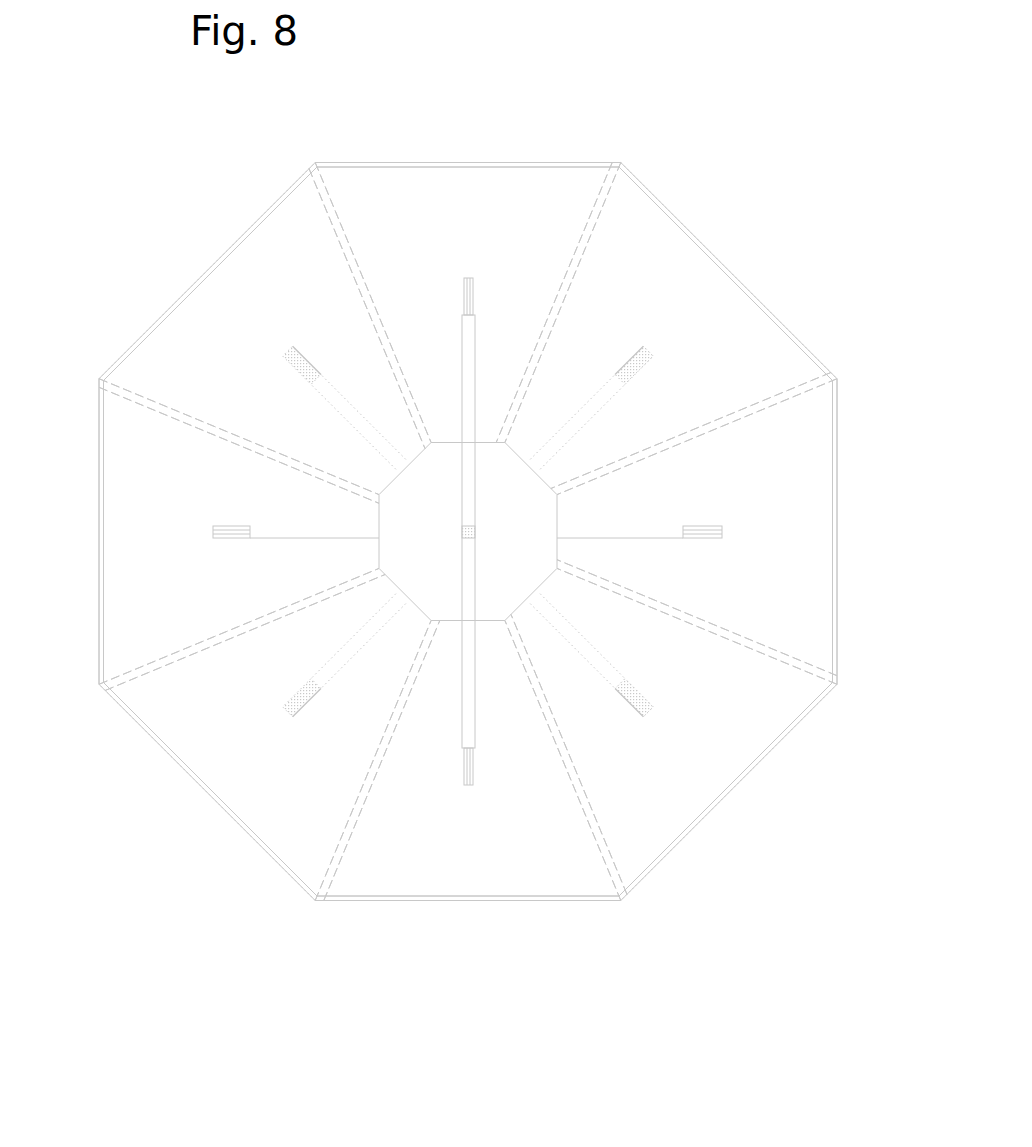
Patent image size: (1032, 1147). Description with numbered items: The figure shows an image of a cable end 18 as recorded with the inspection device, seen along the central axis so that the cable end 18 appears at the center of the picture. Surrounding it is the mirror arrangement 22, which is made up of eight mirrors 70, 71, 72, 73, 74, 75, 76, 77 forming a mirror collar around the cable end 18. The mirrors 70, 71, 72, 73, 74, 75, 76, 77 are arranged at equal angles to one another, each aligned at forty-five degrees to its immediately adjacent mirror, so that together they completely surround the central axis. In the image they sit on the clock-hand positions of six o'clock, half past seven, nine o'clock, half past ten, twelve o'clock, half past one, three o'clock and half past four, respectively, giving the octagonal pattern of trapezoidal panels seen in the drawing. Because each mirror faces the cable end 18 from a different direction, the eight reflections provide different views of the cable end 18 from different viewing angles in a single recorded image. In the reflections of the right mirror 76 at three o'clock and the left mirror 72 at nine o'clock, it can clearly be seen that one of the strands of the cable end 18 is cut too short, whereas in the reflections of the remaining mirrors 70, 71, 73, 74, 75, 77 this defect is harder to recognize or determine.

The cable end 18 is at (506, 531).
The mirror arrangement 22 is at (662, 106).
The mirror 70 is at (455, 882).
The mirror 71 is at (256, 818).
The left mirror 72 is at (117, 532).
The mirror 73 is at (209, 292).
The mirror 74 is at (443, 176).
The mirror 75 is at (785, 350).
The right mirror 76 is at (827, 476).
The mirror 77 is at (676, 820).